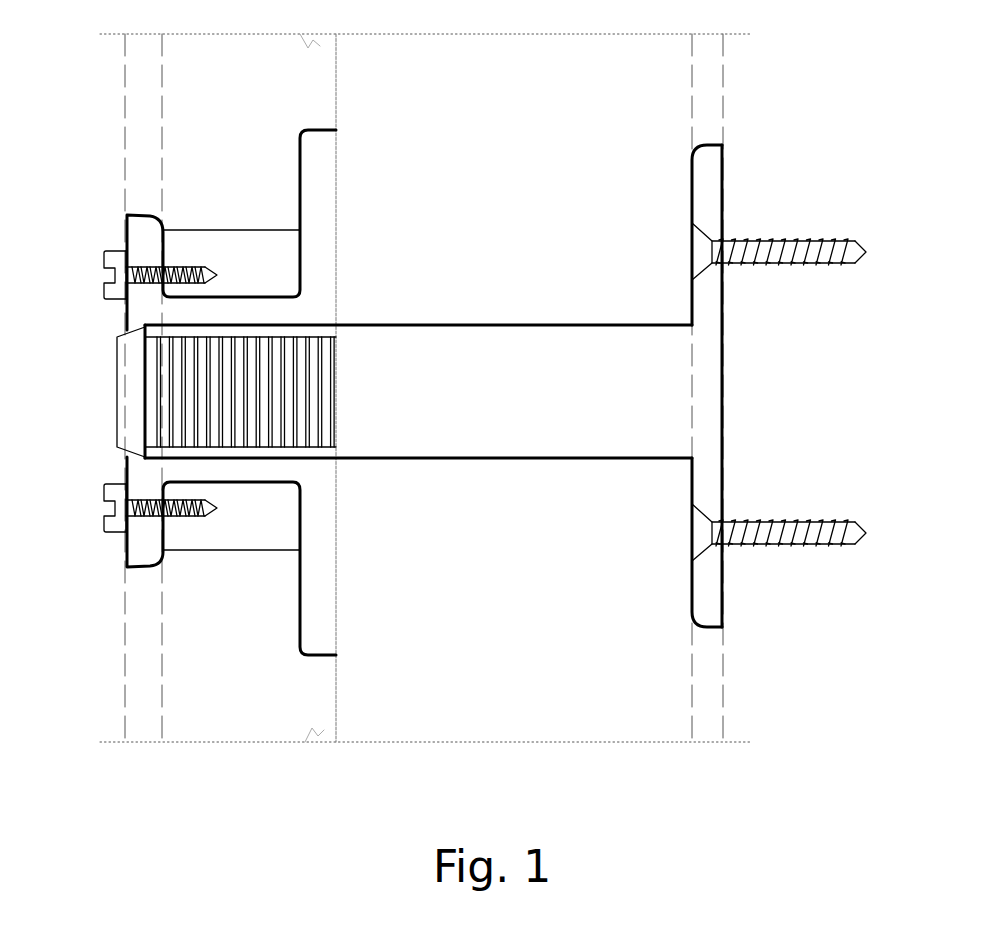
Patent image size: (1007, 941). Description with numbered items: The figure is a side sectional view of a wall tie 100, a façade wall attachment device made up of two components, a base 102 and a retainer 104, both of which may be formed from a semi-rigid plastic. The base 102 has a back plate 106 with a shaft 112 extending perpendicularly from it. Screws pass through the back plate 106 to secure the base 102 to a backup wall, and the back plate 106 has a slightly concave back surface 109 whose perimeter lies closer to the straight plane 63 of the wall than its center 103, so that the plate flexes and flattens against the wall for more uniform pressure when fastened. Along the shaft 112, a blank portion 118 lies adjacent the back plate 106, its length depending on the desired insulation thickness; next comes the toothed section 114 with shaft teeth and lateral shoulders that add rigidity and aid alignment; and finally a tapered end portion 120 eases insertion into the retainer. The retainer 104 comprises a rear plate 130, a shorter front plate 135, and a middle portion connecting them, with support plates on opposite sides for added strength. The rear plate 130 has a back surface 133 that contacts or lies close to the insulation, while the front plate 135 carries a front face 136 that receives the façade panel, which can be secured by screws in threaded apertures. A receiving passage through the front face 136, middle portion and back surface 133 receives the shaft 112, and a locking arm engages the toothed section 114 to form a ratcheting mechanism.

The straight plane 63 is at (724, 718).
The wall tie 100 is at (183, 797).
The base 102 is at (605, 163).
The center 103 is at (724, 383).
The retainer 104 is at (392, 126).
The back plate 106 is at (698, 178).
The back surface 109 is at (724, 458).
The shaft 112 is at (473, 458).
The toothed section 114 is at (332, 437).
The blank portion 118 is at (545, 325).
The end portion 120 is at (118, 400).
The rear plate 130 is at (315, 143).
The back surface 133 is at (337, 187).
The front plate 135 is at (138, 226).
The front face 136 is at (123, 568).